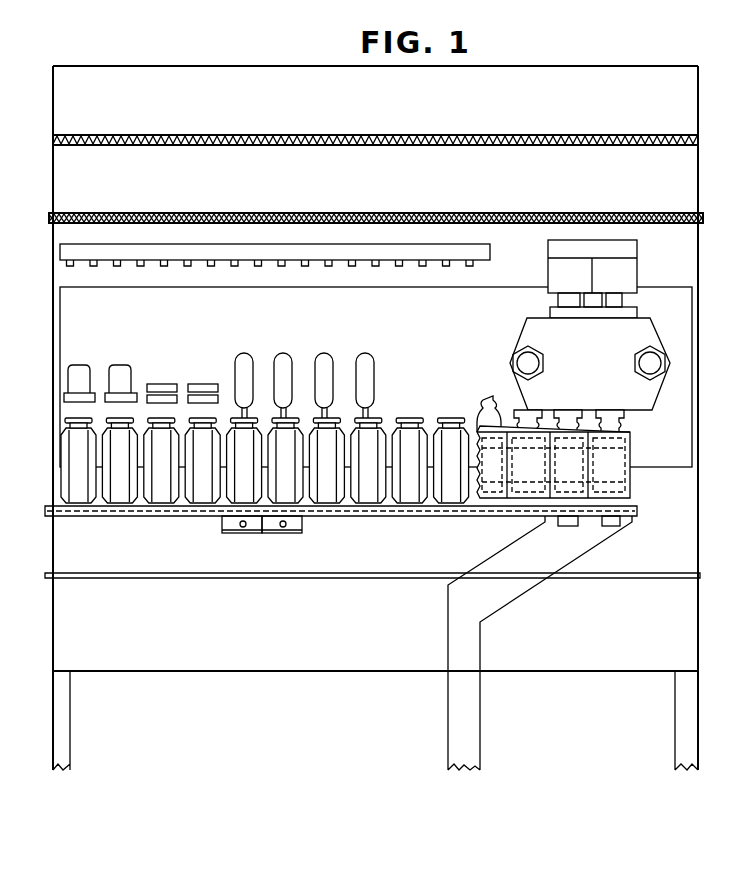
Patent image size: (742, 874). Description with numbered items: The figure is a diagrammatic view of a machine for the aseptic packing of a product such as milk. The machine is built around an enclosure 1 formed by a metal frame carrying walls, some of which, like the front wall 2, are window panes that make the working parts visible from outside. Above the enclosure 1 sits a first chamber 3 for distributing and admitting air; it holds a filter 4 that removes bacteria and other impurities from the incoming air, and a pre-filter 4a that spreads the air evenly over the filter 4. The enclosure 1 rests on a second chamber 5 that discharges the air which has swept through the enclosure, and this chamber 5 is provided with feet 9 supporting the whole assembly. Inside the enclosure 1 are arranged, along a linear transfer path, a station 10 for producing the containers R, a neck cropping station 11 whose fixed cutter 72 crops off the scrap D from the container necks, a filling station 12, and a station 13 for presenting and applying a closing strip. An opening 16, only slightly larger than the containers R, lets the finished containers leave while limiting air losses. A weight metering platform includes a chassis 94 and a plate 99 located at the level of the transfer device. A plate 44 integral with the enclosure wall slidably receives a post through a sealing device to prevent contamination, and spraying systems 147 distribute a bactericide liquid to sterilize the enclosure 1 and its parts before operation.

The enclosure 1 is at (700, 504).
The front wall 2 is at (245, 78).
The first chamber 3 is at (698, 122).
The filter 4 is at (364, 213).
The pre-filter 4a is at (362, 135).
The spraying systems 147 is at (352, 258).
The plate 44 is at (97, 362).
The station for presenting and applying a closing strip 13 is at (180, 372).
The filling station 12 is at (303, 354).
The container producing station 10 is at (514, 324).
The neck cropping station 11 is at (423, 406).
The fixed cutter 72 is at (465, 416).
The scrap D is at (489, 398).
The opening for discharging the containers 16 is at (50, 514).
The chassis 94 is at (273, 533).
The plate 99 is at (292, 478).
The containers R is at (372, 485).
The second chamber 5 is at (372, 643).
The feet 9 is at (70, 745).